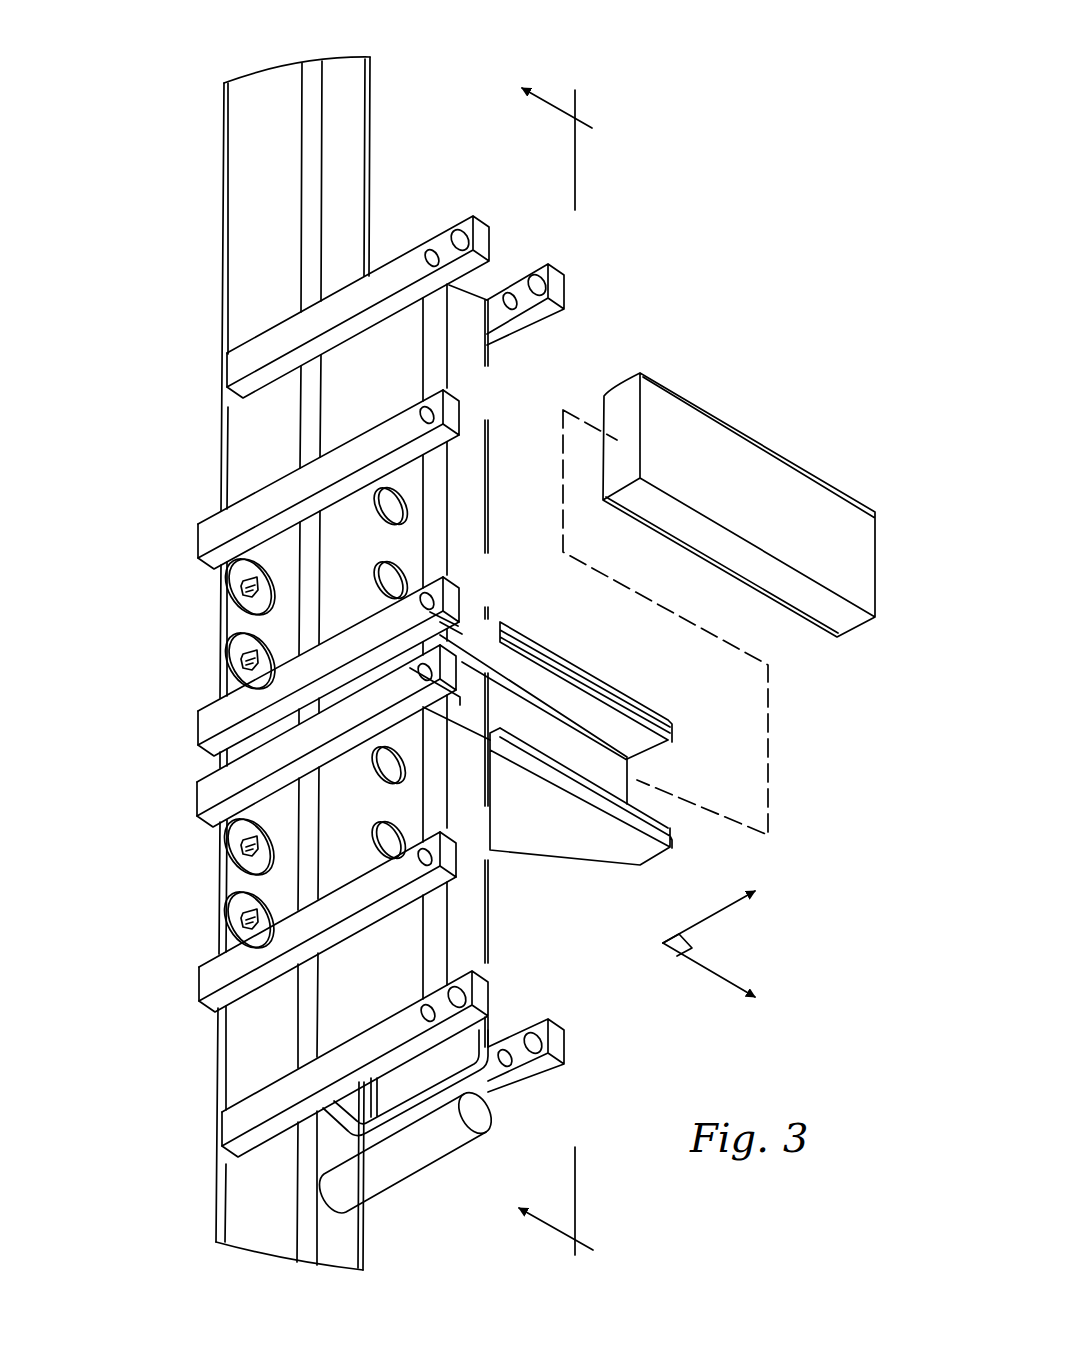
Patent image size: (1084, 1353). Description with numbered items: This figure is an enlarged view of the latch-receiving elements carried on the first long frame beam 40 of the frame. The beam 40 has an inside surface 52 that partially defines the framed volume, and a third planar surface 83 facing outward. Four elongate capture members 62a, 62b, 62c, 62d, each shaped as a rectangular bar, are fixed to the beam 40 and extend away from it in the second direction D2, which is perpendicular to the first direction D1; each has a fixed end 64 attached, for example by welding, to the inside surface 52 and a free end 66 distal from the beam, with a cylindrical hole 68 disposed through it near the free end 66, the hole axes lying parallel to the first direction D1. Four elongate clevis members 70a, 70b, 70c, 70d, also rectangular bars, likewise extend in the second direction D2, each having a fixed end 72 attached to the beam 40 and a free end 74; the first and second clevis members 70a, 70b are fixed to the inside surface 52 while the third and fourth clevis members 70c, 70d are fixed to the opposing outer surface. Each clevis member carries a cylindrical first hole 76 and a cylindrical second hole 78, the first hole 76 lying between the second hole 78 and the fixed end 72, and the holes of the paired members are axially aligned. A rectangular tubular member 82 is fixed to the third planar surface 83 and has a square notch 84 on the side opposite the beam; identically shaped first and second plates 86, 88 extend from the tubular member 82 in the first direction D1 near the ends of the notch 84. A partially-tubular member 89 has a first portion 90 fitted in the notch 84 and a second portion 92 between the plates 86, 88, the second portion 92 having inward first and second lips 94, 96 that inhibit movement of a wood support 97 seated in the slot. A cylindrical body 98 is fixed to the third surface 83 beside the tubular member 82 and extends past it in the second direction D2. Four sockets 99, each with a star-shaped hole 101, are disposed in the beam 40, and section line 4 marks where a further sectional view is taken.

The first long frame beam 40 is at (315, 66).
The inside surface 52 is at (253, 212).
The third planar surface 83 is at (328, 1244).
The rectangular tubular member 82 is at (470, 505).
The first clevis member 70a is at (292, 330).
The second clevis member 70b is at (291, 1082).
The third clevis member 70c is at (530, 322).
The fourth clevis member 70d is at (540, 1062).
The fixed end 72 is at (222, 376).
The free end 74 is at (482, 240).
The first hole 76 is at (430, 248).
The second hole 78 is at (460, 229).
The elongate capture member 62a is at (298, 487).
The elongate capture member 62b is at (376, 607).
The elongate capture member 62c is at (323, 758).
The elongate capture member 62d is at (325, 936).
The fixed end 64 is at (198, 542).
The free end 66 is at (452, 412).
The cylindrical hole 68 is at (422, 408).
The socket 99 is at (262, 643).
The star-shaped hole 101 is at (243, 594).
The square notch 84 is at (485, 659).
The first plate 86 is at (608, 688).
The second plate 88 is at (577, 850).
The partially-tubular member 89 is at (645, 742).
The first portion 90 is at (468, 643).
The second portion 92 is at (549, 742).
The first lip 94 is at (626, 717).
The second lip 96 is at (592, 788).
The wood support 97 is at (750, 440).
The cylindrical body 98 is at (424, 1160).
The section line 4- 4 is at (556, 675).
The first direction D1 is at (724, 979).
The second direction D2 is at (724, 915).